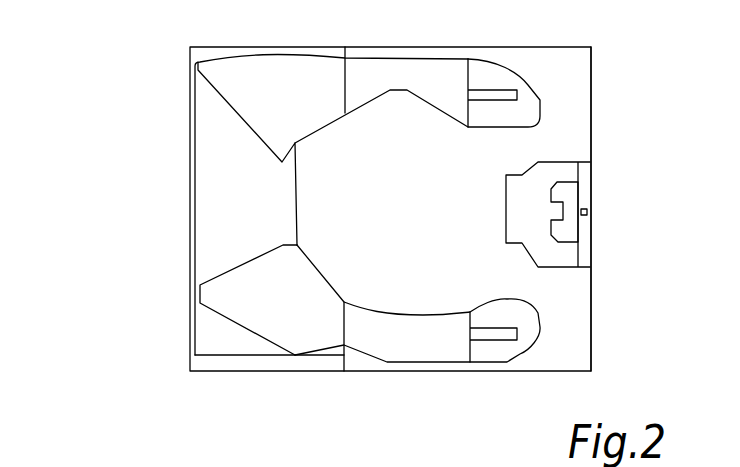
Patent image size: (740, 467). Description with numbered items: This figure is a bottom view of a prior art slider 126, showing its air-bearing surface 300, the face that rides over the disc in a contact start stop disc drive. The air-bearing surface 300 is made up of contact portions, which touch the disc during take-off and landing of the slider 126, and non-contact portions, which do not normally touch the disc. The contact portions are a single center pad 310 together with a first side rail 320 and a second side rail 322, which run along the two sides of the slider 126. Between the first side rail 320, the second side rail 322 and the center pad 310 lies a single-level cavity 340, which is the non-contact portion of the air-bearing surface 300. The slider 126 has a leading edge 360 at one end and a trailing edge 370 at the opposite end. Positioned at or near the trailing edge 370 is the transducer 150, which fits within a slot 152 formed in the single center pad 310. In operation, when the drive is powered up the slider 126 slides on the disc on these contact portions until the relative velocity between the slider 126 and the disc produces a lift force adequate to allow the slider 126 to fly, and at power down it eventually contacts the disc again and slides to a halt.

The slider 126 is at (92, 83).
The transducer 150 is at (591, 210).
The slot 152 is at (582, 201).
The air-bearing surface 300 is at (378, 216).
The single center pad 310 is at (588, 190).
The first side rail 320 is at (437, 72).
The second side rail 322 is at (418, 350).
The single-level cavity 340 is at (337, 163).
The leading edge 360 is at (191, 234).
The trailing edge 370 is at (591, 280).